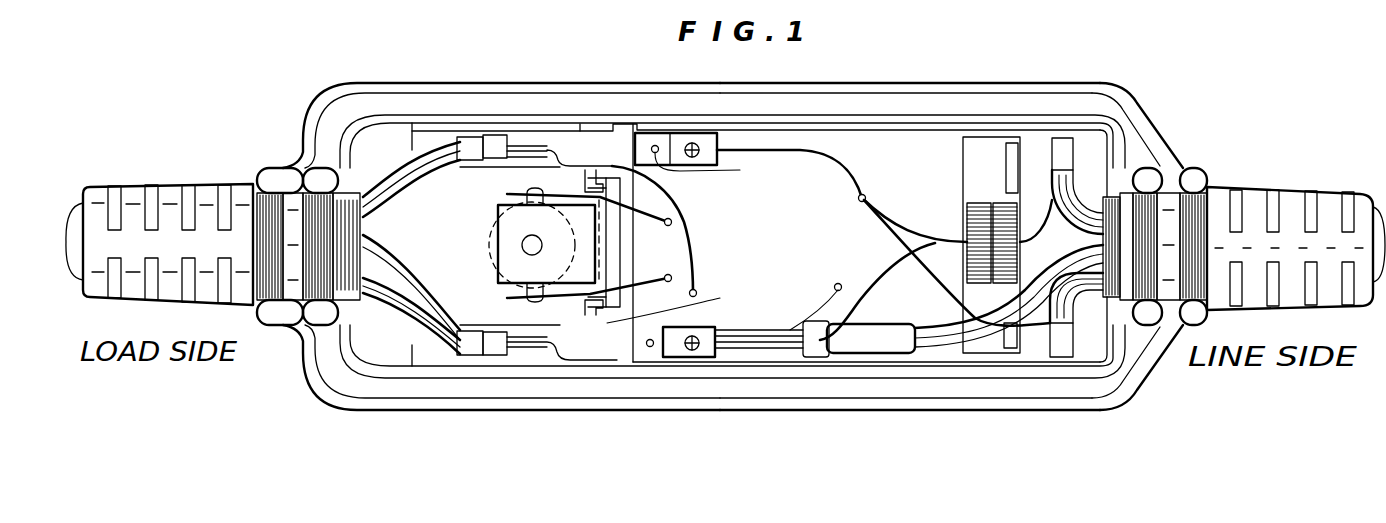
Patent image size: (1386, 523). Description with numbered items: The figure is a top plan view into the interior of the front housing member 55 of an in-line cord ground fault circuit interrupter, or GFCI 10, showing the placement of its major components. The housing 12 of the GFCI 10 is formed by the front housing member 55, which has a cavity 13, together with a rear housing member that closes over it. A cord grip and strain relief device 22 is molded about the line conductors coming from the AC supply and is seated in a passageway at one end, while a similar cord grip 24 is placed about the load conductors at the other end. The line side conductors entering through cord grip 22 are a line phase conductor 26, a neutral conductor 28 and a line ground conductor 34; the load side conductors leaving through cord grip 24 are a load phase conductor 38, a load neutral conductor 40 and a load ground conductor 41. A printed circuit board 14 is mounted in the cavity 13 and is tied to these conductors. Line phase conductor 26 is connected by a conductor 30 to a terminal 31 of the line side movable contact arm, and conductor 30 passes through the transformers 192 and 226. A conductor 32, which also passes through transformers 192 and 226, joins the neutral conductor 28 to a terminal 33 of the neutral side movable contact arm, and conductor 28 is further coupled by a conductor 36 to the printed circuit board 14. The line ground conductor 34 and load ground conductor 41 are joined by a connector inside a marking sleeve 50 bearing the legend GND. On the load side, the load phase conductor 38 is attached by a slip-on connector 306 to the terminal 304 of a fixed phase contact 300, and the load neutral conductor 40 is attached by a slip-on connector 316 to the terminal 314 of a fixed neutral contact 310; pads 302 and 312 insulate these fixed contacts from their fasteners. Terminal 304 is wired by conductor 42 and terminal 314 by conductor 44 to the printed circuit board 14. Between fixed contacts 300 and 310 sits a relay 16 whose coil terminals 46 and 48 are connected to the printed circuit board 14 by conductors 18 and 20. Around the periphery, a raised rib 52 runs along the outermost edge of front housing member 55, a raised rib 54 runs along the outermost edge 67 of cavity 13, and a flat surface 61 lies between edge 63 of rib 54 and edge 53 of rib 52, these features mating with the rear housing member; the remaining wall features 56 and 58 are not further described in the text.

The in-line ground fault circuit interrupter 10 is at (1124, 78).
The housing 12 is at (438, 80).
The cavity 13 is at (1110, 145).
The printed circuit board 14 is at (920, 127).
The relay 16 is at (500, 229).
The conductor 18 is at (570, 190).
The conductor 20 is at (565, 318).
The cord grip and strain relief device 22 is at (1330, 192).
The cord grip 24 is at (246, 186).
The line phase conductor 26 is at (1072, 207).
The neutral line conductor 28 is at (1083, 297).
The conductor 30 is at (850, 173).
The terminal 31 is at (712, 135).
The conductor 32 is at (887, 272).
The terminal 33 is at (705, 350).
The line ground conductor 34 is at (940, 330).
The conductor 36 is at (912, 225).
The load phase conductor 38 is at (400, 173).
The load neutral conductor 40 is at (387, 300).
The load ground conductor 41 is at (392, 256).
The conductor 42 is at (675, 198).
The conductor 44 is at (806, 307).
The coil terminal 46 is at (508, 193).
The coil terminal 48 is at (507, 298).
The marking sleeve 50 is at (871, 324).
The raised rib 52 is at (506, 80).
The edge 53 is at (1137, 104).
The raised rib 54 is at (560, 128).
The front housing member 55 is at (967, 78).
The inner housing lower wall 56 is at (506, 378).
The inner housing bottom wall 58 is at (583, 403).
The flat surface 61 is at (1165, 167).
The edge 63 is at (1120, 128).
The outermost edge 67 is at (978, 123).
The transformer 192 is at (983, 205).
The transformer 226 is at (1007, 205).
The fixed phase contact 300 is at (635, 128).
The pad 302 is at (738, 171).
The terminal 304 is at (560, 128).
The slip-on connector 306 is at (524, 128).
The fixed neutral contact 310 is at (698, 292).
The pad 312 is at (655, 350).
The terminal 314 is at (541, 357).
The slip-on connector 316 is at (523, 348).